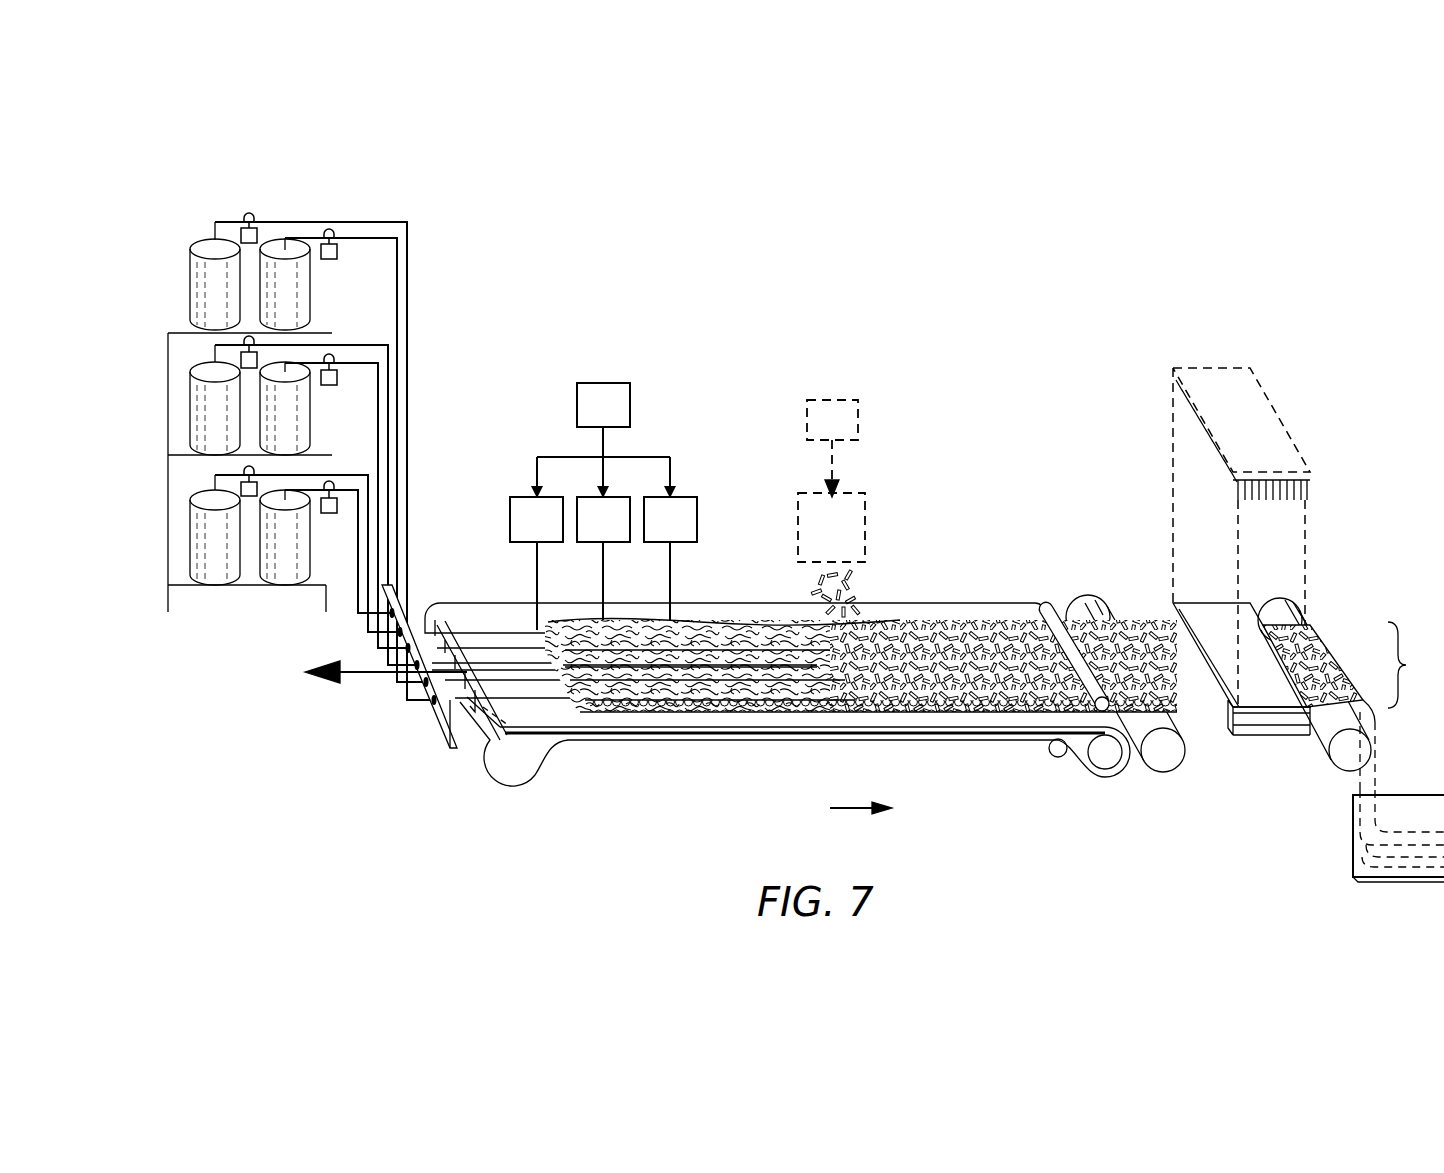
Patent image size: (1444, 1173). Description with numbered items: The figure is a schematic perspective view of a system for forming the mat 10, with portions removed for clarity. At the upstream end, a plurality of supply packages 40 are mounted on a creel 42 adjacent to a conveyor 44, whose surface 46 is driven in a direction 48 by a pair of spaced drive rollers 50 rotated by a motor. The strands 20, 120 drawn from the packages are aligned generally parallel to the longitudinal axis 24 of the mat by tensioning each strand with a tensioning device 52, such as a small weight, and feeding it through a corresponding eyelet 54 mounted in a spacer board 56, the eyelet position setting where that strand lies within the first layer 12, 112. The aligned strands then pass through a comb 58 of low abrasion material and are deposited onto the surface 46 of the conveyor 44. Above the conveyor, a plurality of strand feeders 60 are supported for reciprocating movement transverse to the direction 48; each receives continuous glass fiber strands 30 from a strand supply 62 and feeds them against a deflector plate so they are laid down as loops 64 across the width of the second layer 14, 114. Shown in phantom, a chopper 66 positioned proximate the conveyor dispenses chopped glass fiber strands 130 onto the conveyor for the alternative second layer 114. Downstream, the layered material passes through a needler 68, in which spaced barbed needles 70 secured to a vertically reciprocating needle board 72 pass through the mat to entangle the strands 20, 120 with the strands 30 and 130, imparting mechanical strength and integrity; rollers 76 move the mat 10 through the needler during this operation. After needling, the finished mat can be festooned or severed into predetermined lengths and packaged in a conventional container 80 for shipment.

The mat 10 is at (1323, 625).
The first layer 12 is at (462, 628).
The first layer 112 is at (735, 625).
The second layer 14 is at (692, 622).
The second layer 114 is at (724, 610).
The strands 20 is at (553, 700).
The strands 120 is at (863, 761).
The longitudinal axis 24 is at (362, 677).
The continuous glass fiber strands 30 is at (861, 696).
The supply packages 40 is at (190, 292).
The creel 42 is at (246, 588).
The conveyor 44 is at (907, 728).
The surface 46 is at (598, 722).
The direction 48 is at (855, 809).
The drive rollers 50 is at (1097, 760).
The tensioning device 52 is at (257, 242).
The eyelet 54 is at (433, 702).
The spacer board 56 is at (447, 745).
The comb 58 is at (422, 607).
The strand feeders 60 is at (697, 520).
The strand supply 62 is at (630, 407).
The loops 64 is at (693, 710).
The chopper 66 is at (865, 512).
The needler 68 is at (1235, 737).
The needles 70 is at (1307, 492).
The needle board 72 is at (1250, 603).
The rollers 76 is at (1325, 757).
The container 80 is at (1410, 795).
The chopped glass fiber strands 130 is at (855, 594).